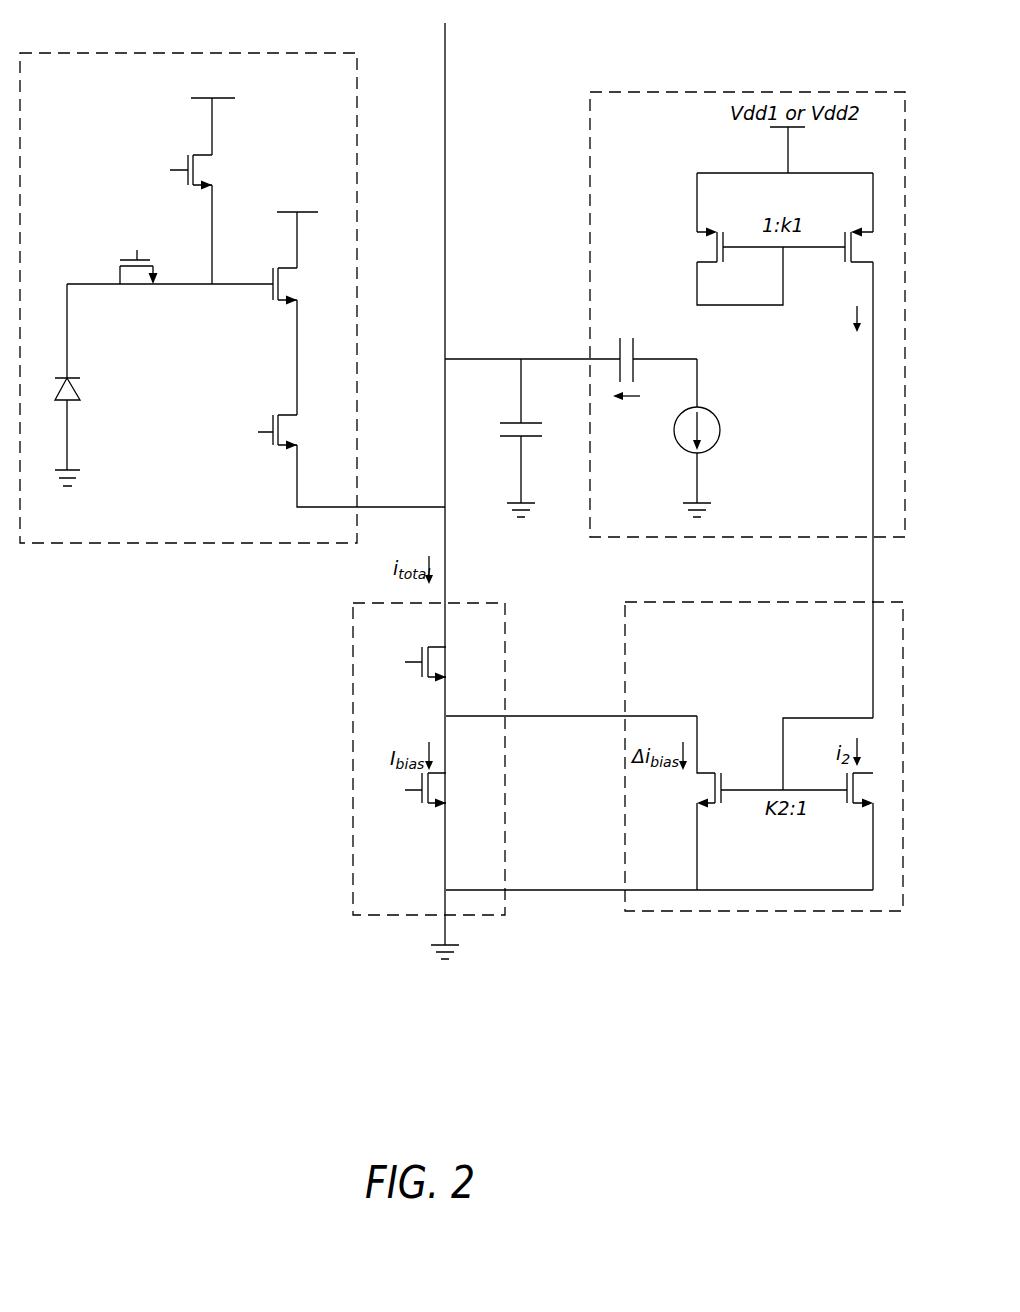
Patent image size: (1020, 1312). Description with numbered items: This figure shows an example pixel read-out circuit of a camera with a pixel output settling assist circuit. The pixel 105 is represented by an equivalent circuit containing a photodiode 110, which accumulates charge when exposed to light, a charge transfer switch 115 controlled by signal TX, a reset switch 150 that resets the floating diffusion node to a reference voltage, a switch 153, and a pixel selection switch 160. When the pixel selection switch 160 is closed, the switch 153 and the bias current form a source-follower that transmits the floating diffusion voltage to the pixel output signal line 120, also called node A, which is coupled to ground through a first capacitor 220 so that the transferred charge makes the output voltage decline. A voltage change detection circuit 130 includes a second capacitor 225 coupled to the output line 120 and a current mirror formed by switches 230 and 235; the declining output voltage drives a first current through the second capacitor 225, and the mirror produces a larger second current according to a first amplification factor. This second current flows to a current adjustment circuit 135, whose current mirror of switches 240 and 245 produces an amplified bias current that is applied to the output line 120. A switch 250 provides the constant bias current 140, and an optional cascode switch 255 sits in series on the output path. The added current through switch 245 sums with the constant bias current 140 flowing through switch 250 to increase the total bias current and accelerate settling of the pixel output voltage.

The pixel 105 is at (72, 93).
The photodiode 110 is at (88, 385).
The charge transfer switch 115 is at (170, 273).
The pixel output signal line 120 is at (445, 48).
The voltage change detection circuit 130 is at (640, 142).
The current adjustment circuit 135 is at (678, 641).
The constant bias current 140 is at (405, 897).
The reset switch 150 is at (192, 178).
The switch 153 is at (306, 313).
The pixel selection switch 160 is at (351, 461).
The capacitor C1 220 is at (525, 438).
The capacitor C2 225 is at (641, 372).
The switch 230 is at (751, 267).
The switch 235 is at (850, 461).
The switch 240 is at (843, 804).
The switch 245 is at (755, 803).
The switch 250 is at (639, 831).
The cascode switch 255 is at (551, 681).